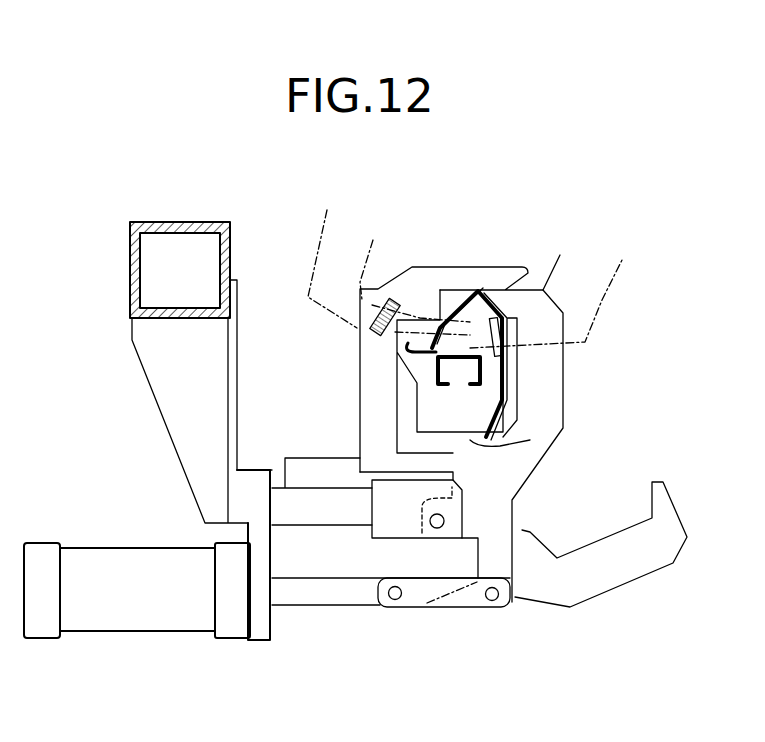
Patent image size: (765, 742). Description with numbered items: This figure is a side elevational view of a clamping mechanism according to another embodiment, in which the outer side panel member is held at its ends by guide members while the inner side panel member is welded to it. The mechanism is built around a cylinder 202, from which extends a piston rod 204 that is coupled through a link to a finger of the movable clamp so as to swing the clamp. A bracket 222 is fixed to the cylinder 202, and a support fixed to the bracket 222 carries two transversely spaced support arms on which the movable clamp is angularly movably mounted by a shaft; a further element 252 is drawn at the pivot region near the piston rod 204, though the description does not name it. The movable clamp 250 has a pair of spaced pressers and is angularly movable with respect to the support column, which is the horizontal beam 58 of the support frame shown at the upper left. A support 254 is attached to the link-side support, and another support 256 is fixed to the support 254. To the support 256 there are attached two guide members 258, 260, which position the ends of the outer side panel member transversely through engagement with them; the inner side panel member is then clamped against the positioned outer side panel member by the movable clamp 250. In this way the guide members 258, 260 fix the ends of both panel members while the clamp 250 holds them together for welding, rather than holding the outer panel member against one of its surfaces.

The horizontal beam 58 is at (181, 222).
The cylinder 202 is at (146, 612).
The bracket 222 is at (258, 632).
The support 254 is at (318, 470).
The support 256 is at (372, 357).
The guide member 260 is at (460, 297).
The guide member 258 is at (473, 443).
The pivot block 252 is at (444, 521).
The piston rod 204 is at (342, 593).
The movable clamp 250 is at (580, 398).